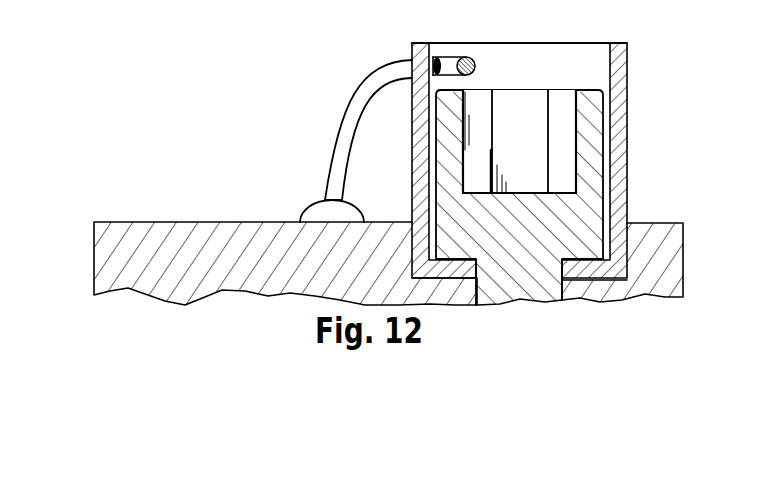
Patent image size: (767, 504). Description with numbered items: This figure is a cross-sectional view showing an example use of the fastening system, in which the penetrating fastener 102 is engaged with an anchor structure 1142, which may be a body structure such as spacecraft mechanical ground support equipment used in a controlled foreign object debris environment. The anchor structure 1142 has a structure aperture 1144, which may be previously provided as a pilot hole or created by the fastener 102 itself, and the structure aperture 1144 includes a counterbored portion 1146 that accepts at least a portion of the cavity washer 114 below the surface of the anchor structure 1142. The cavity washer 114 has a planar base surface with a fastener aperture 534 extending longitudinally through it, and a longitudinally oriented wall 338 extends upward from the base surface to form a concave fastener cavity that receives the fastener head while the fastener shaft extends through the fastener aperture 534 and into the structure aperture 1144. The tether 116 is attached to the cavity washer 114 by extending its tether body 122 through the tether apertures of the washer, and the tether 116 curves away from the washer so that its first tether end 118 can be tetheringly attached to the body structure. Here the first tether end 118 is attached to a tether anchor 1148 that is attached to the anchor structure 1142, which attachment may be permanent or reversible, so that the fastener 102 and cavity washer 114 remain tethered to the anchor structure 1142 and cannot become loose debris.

The penetrating fastener 102 is at (526, 72).
The cavity washer 114 is at (650, 73).
The tether 116 is at (368, 64).
The first tether end 118 is at (318, 176).
The tether body 122 is at (455, 57).
The wall 338 is at (575, 43).
The fastener aperture 534 is at (565, 272).
The anchor structure 1142 is at (198, 243).
The structure aperture 1144 is at (567, 290).
The counterbored portion 1146 is at (632, 289).
The tether anchor 1148 is at (300, 207).